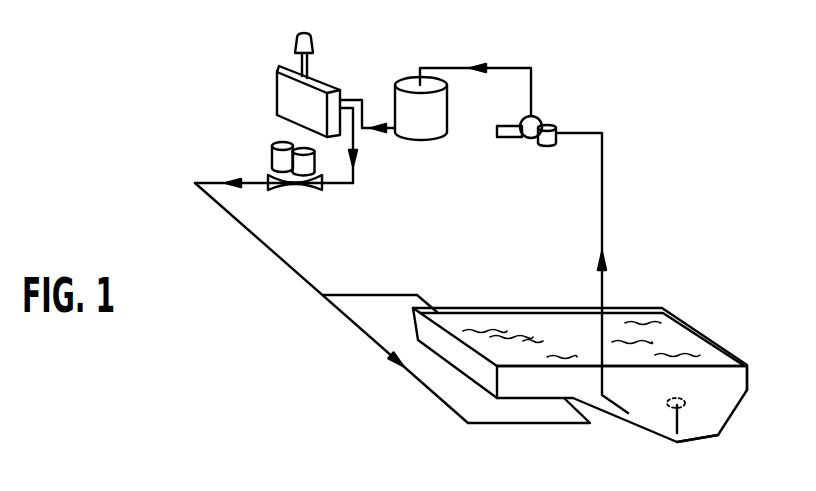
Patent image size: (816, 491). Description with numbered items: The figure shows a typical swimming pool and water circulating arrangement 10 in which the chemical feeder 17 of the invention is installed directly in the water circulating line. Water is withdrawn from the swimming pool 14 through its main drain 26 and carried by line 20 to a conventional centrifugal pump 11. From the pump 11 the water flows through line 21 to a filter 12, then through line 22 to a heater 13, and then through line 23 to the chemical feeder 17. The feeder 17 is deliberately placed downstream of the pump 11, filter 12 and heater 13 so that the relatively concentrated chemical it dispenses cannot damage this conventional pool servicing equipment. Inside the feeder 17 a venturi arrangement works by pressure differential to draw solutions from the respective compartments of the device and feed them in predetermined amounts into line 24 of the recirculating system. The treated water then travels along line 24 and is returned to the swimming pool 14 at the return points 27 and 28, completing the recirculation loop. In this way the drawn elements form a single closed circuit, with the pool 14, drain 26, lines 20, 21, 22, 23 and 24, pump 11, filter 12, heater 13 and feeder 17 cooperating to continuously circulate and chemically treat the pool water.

The swimming pool and water circulating arrangement 10 is at (540, 354).
The centrifugal pump 11 is at (544, 117).
The filter 12 is at (431, 129).
The heater 13 is at (278, 90).
The swimming pool 14 is at (718, 402).
The chemical feeder 17 is at (272, 154).
The line 20 is at (603, 188).
The line 21 is at (504, 67).
The line 22 is at (353, 97).
The line 23 is at (338, 185).
The line 24 is at (283, 261).
The main drain 26 is at (685, 408).
The return point 27 is at (448, 320).
The return point 28 is at (545, 378).